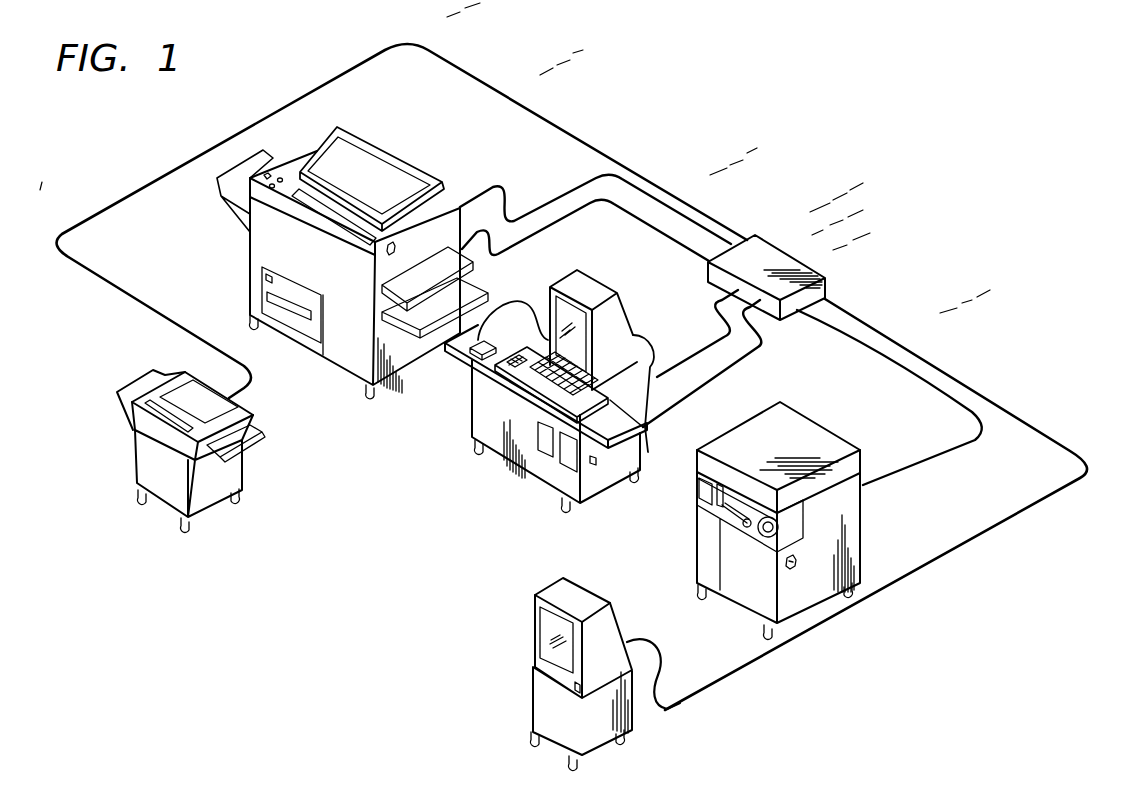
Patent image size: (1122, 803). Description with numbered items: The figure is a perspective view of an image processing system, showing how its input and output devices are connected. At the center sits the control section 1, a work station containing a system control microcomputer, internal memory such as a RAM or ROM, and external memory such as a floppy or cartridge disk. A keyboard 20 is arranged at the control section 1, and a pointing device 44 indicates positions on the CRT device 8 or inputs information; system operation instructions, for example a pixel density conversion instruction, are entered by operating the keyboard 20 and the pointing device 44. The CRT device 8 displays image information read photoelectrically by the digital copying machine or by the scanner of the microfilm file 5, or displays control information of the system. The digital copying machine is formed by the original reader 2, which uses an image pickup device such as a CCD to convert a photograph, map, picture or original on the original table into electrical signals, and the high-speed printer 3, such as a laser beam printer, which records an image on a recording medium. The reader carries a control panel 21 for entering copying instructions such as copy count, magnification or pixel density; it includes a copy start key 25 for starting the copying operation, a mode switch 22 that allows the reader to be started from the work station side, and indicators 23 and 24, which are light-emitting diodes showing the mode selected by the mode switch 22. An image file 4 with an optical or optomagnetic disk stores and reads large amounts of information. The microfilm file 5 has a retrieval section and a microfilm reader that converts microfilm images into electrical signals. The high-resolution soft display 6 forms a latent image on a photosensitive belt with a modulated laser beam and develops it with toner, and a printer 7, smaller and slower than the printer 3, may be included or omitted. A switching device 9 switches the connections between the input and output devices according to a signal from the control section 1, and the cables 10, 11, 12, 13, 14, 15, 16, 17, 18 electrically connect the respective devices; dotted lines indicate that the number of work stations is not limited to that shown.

The control section 1 is at (553, 385).
The original reader 2 is at (340, 140).
The high-speed printer 3 is at (333, 247).
The image file 4 is at (307, 330).
The microfilm file 5 is at (825, 442).
The high-resolution soft display 6 is at (580, 597).
The printer 7 is at (147, 460).
The CRT device 8 is at (570, 313).
The switching device 9 is at (773, 260).
The cable 10 is at (562, 128).
The cable 11 is at (533, 208).
The cable 12 is at (560, 222).
The cable 13 is at (688, 353).
The cable 14 is at (733, 362).
The cable 15 is at (845, 337).
The cable 16 is at (870, 328).
The cable 17 is at (514, 294).
The cable 18 is at (634, 336).
The keyboard 20 is at (645, 427).
The control panel 21 is at (333, 217).
The mode switch 22 is at (264, 174).
The indicator 23 is at (280, 178).
The indicator 24 is at (224, 198).
The copy start key 25 is at (366, 240).
The pointing device 44 is at (468, 360).